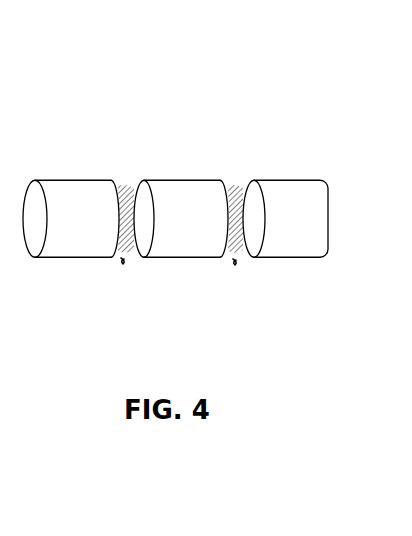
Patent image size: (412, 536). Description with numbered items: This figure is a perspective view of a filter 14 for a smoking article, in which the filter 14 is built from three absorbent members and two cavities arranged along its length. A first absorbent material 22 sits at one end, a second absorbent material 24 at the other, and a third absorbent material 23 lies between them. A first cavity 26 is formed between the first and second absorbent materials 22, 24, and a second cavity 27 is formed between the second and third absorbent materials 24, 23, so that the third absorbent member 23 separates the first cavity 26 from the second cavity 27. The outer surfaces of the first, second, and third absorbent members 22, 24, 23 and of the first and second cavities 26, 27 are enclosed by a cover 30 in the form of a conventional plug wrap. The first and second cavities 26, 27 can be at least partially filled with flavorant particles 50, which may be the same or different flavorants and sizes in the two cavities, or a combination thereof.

The pipe assembly 14 is at (238, 141).
The first pipe section 22 is at (63, 243).
The second pipe section 24 is at (180, 243).
The third pipe section 23 is at (293, 243).
The first joint 26 is at (123, 259).
The second joint 27 is at (235, 259).
The closed end 30 is at (285, 178).
The seal 50 is at (121, 176).